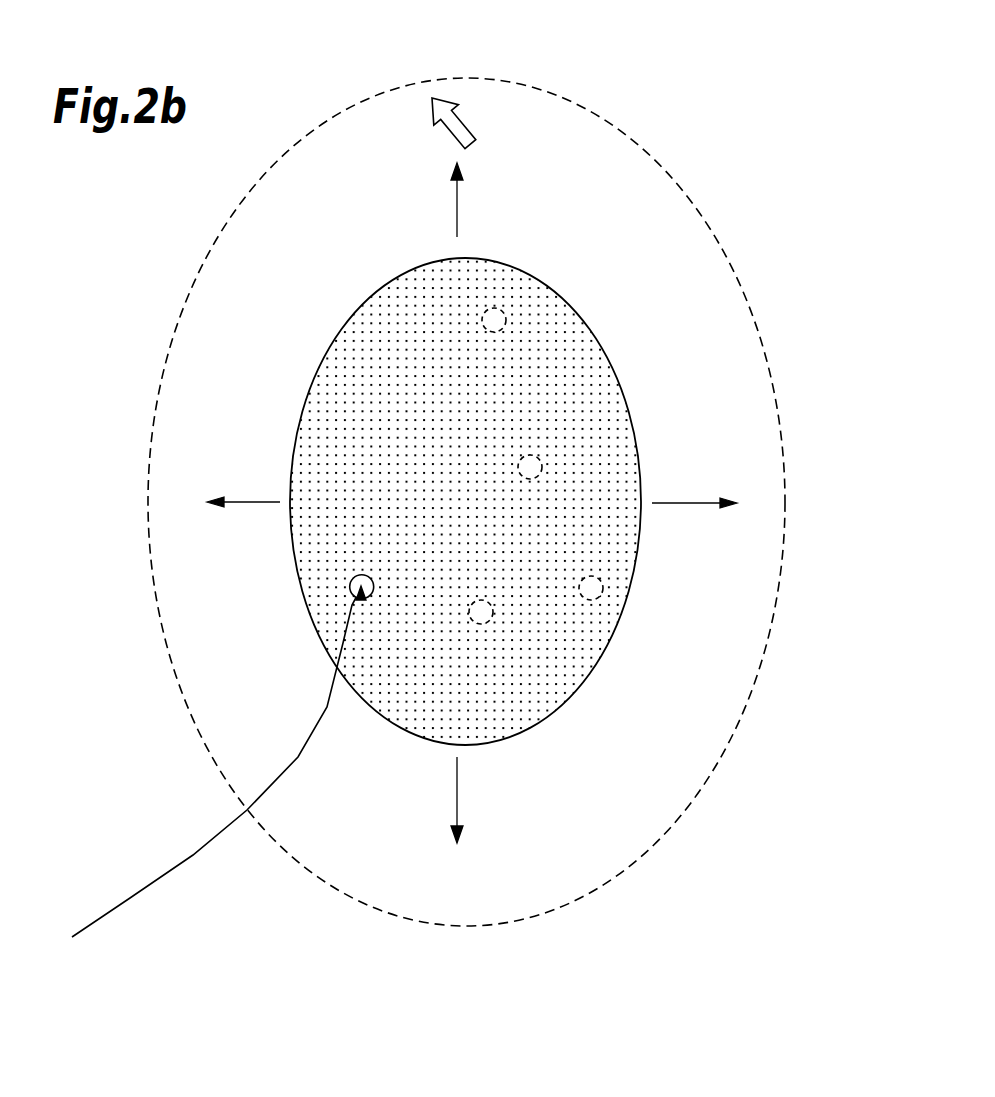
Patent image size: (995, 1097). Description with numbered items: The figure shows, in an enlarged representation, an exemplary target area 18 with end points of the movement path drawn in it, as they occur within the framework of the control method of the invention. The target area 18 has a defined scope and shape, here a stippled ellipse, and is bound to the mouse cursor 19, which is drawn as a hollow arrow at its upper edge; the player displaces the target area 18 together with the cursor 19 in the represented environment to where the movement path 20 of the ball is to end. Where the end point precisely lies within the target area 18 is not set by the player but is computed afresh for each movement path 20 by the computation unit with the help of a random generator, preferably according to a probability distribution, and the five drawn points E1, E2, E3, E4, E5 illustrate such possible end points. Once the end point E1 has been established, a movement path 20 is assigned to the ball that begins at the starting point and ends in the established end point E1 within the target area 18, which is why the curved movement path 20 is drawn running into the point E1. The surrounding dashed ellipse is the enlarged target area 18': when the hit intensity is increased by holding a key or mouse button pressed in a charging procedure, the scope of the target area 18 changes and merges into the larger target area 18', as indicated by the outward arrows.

The target area 18 is at (528, 617).
The enlarged target area 18' is at (519, 502).
The mouse cursor 19 is at (443, 115).
The movement path 20 is at (193, 855).
The end point E1 is at (361, 587).
The end point E2 is at (494, 320).
The end point E3 is at (530, 467).
The end point E4 is at (591, 588).
The end point E5 is at (481, 612).